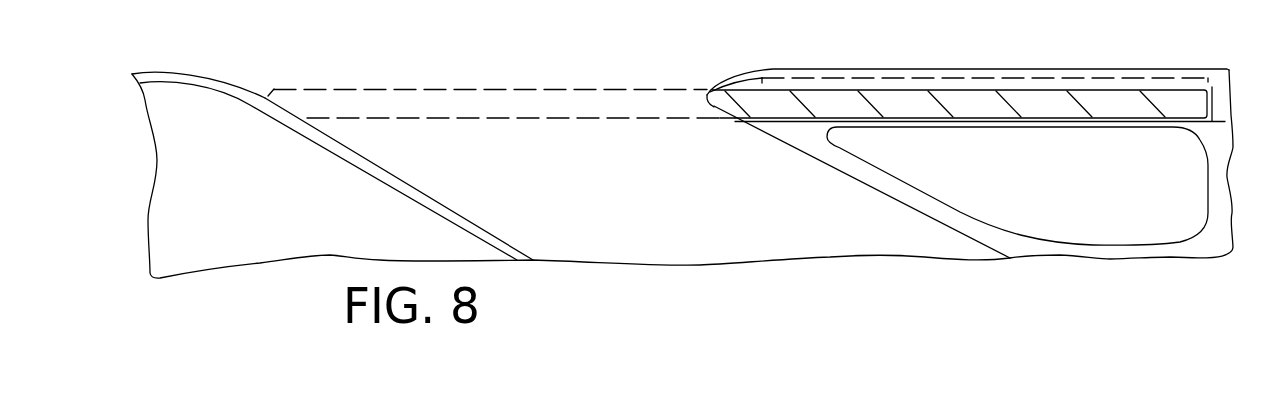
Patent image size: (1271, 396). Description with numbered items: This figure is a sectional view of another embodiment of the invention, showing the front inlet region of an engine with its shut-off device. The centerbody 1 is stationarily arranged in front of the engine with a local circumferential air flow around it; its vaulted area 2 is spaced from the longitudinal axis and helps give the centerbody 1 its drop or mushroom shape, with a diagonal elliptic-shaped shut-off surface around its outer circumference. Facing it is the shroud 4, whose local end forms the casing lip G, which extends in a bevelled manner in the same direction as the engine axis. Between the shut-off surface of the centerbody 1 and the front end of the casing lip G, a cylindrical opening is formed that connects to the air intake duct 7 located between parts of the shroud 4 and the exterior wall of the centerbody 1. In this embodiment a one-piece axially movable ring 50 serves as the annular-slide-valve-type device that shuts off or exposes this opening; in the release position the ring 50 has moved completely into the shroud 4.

The centerbody 1 is at (484, 225).
The vaulted area 2 is at (262, 93).
The one-piece axially movable ring 50 is at (567, 103).
The shroud 4 is at (1059, 70).
The casing lip G is at (718, 109).
The air intake duct 7 is at (735, 235).